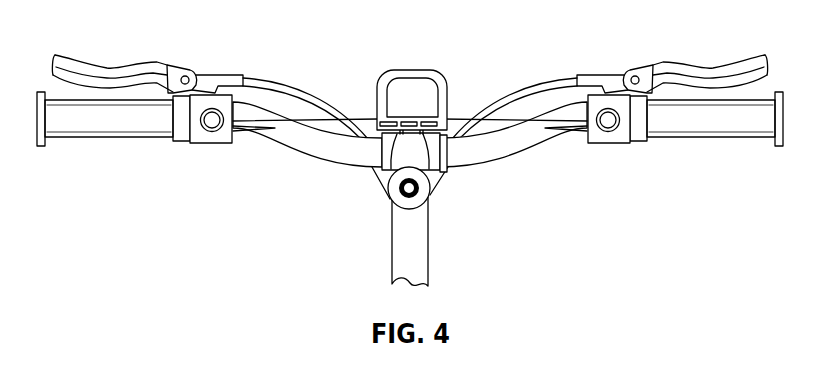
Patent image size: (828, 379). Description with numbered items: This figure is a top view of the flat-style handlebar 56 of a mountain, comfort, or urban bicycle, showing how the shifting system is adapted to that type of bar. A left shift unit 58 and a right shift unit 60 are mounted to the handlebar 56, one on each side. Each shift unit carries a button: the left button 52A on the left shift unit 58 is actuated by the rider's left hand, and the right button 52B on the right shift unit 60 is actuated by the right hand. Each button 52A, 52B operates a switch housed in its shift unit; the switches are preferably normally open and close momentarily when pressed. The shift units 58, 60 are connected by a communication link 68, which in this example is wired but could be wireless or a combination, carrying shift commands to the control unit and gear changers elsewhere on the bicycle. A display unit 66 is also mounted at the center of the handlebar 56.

The left button 52A is at (211, 124).
The right button 52B is at (614, 122).
The handlebar 56 is at (478, 165).
The left shift unit 58 is at (222, 143).
The right shift unit 60 is at (608, 143).
The cycling computer display 66 is at (436, 69).
The communication link 68 is at (320, 116).